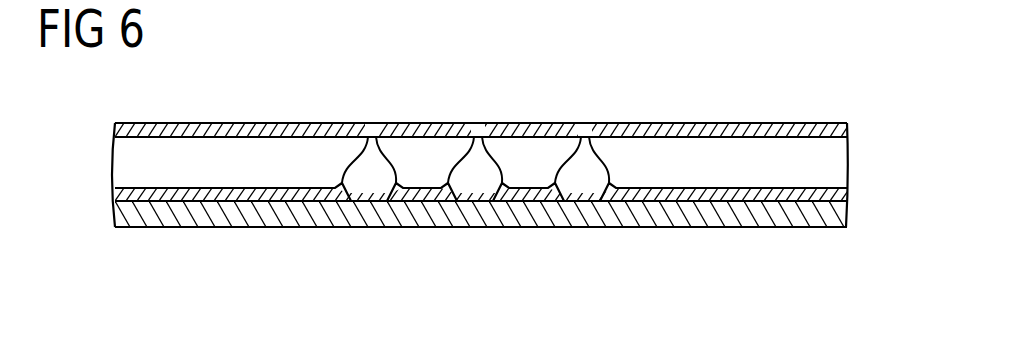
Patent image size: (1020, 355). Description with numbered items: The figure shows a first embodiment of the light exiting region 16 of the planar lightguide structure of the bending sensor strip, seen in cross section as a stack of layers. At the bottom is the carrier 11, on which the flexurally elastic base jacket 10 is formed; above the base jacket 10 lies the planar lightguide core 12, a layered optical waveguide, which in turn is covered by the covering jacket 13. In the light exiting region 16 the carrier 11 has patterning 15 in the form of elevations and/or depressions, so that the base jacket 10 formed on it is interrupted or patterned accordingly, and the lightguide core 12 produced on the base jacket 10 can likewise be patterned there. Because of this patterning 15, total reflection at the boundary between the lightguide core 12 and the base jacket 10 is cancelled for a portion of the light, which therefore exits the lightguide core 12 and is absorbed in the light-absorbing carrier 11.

The base jacket 10 is at (842, 195).
The carrier 11 is at (838, 222).
The lightguide core 12 is at (840, 160).
The covering jacket 13 is at (807, 123).
The patterning 15 is at (376, 137).
The light exiting region 16 is at (517, 195).